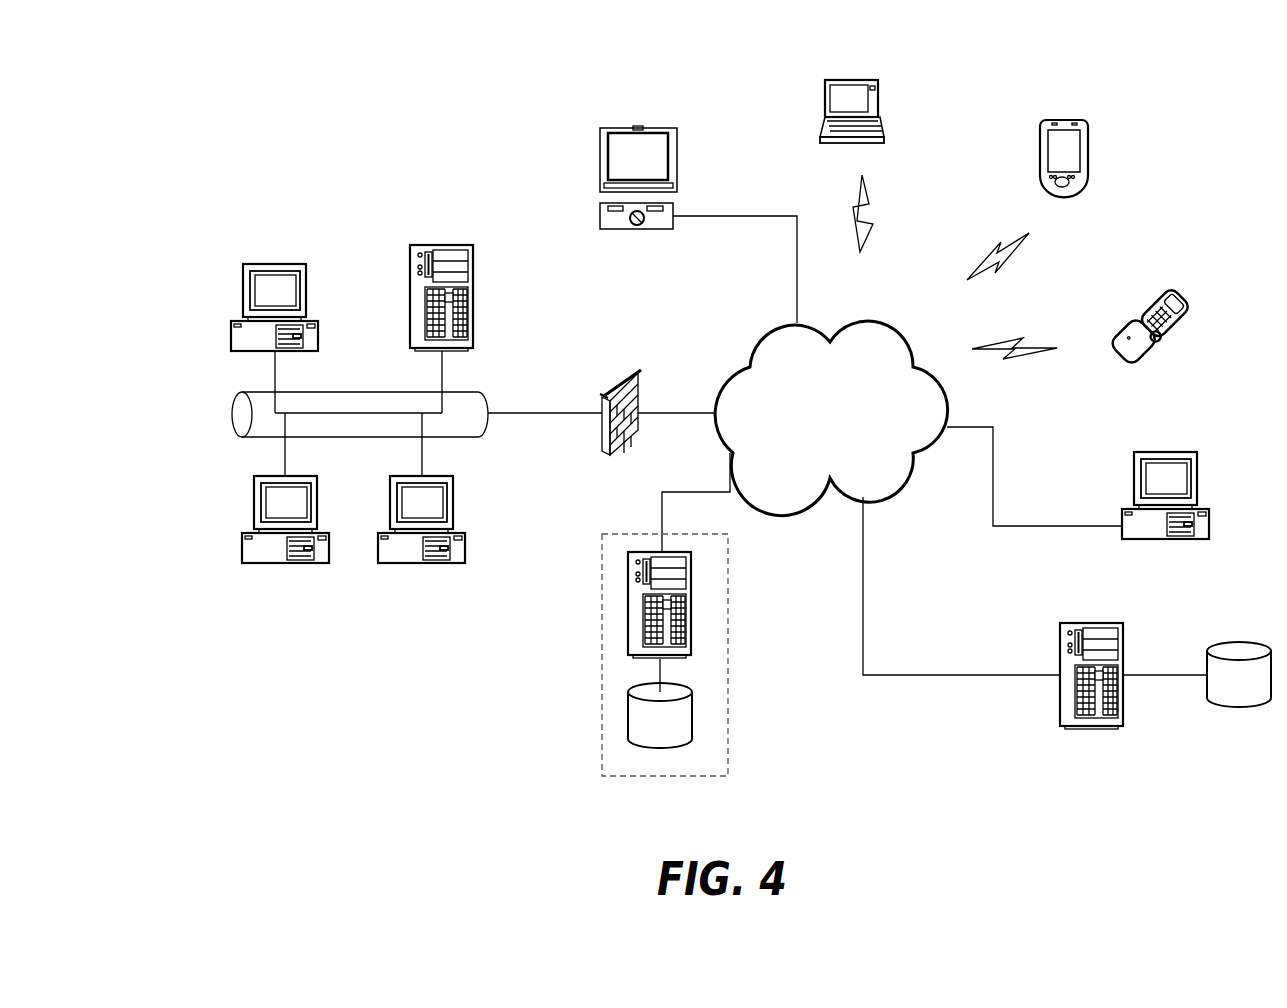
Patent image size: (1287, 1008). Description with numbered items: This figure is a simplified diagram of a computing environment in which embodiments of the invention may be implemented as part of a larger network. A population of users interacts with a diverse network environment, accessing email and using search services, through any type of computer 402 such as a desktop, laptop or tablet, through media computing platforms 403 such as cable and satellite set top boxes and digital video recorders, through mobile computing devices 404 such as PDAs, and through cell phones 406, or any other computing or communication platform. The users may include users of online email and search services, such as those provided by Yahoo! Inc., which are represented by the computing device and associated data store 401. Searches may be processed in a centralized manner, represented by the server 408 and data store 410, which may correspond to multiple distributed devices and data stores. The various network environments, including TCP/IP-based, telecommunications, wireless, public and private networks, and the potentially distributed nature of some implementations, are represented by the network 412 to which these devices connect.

The computing device and associated data store 401 is at (728, 688).
The computer 402 is at (243, 297).
The media computing platform 403 is at (598, 215).
The mobile computing device 404 is at (1038, 130).
The cell phone 406 is at (1148, 298).
The server 408 is at (1070, 622).
The data store 410 is at (1237, 640).
The network 412 is at (762, 340).